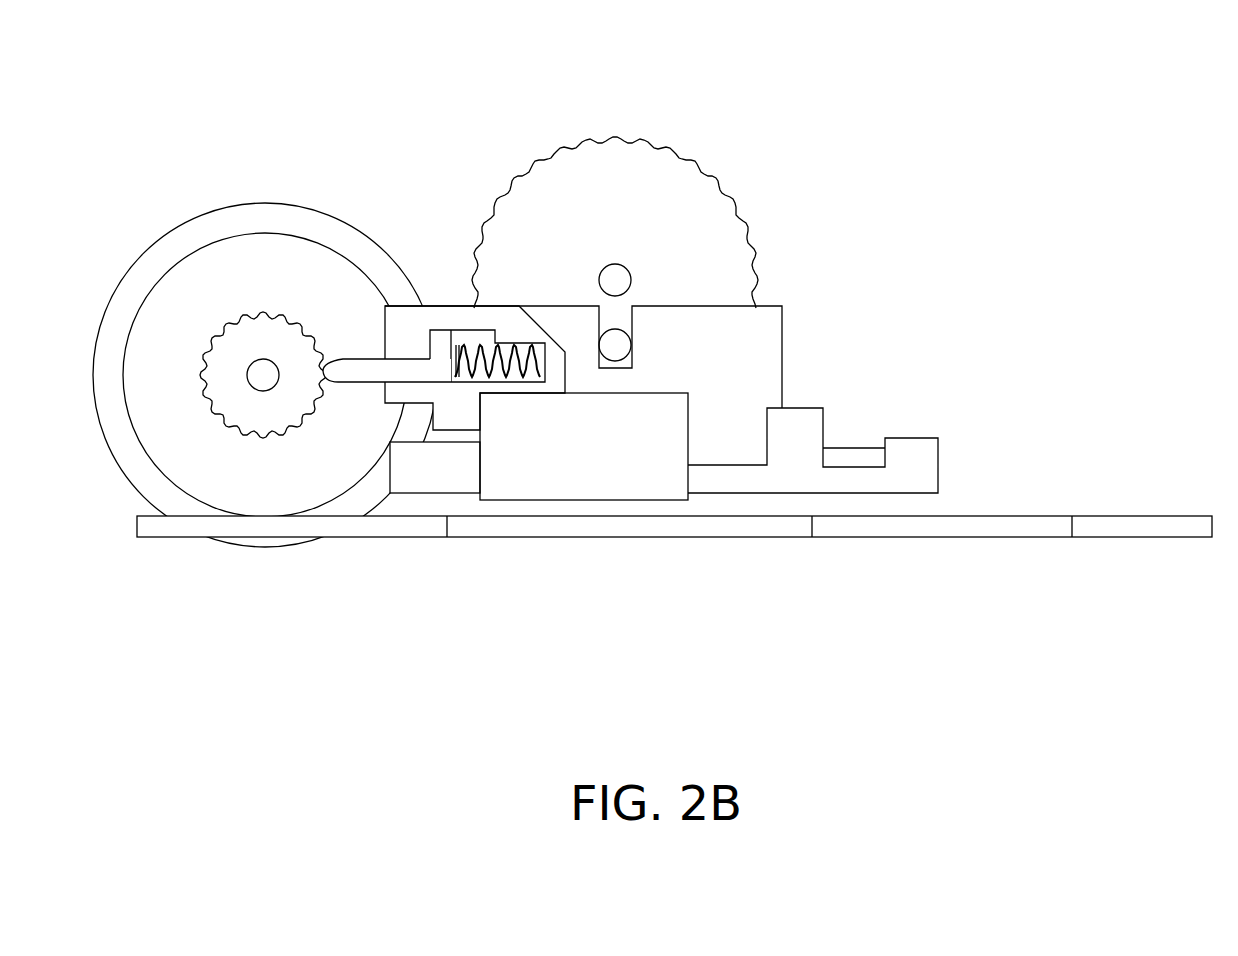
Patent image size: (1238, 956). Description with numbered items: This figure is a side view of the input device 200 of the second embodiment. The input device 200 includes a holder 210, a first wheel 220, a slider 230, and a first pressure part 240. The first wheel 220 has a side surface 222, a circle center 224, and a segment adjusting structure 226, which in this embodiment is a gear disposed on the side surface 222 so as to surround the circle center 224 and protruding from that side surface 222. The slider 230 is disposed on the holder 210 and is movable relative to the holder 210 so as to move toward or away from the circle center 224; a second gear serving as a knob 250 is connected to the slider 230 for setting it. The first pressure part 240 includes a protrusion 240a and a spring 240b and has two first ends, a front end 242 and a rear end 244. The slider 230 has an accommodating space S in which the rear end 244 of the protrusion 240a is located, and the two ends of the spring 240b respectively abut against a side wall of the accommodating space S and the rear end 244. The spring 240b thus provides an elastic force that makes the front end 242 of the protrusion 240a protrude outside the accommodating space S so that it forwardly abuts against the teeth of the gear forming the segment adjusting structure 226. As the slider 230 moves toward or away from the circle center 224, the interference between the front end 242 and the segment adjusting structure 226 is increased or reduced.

The input device 200 is at (988, 160).
The holder 210 is at (932, 528).
The first wheel 220 is at (357, 96).
The side surface 222 is at (195, 308).
The circle center 224 is at (262, 372).
The segment adjusting structure 226 is at (295, 342).
The slider 230 is at (725, 437).
The first pressure part 240 is at (353, 682).
The protrusion 240a is at (298, 628).
The spring 240b is at (508, 377).
The front end 242 is at (333, 383).
The rear end 244 is at (438, 377).
The knob 250 is at (690, 180).
The accommodating space S is at (470, 338).